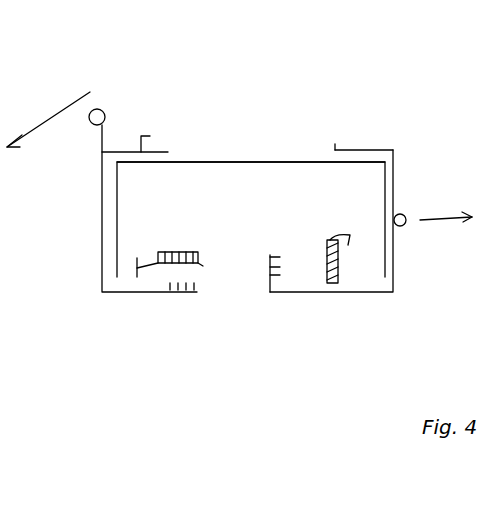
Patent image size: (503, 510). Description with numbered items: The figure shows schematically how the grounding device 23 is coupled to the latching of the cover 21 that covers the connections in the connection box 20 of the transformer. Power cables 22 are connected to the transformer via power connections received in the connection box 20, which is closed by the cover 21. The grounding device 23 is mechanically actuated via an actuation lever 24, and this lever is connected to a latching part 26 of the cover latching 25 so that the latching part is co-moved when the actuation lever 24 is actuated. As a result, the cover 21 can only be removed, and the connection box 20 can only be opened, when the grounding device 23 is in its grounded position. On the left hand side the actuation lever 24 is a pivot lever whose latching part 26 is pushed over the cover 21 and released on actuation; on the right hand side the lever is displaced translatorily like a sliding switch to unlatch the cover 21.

The connection box 20 is at (247, 208).
The cover 21 is at (235, 162).
The power cables 22 is at (313, 295).
The grounding device 23 is at (203, 286).
The actuation lever 24 is at (97, 142).
The cover latching 25 is at (170, 150).
The latching part 26 is at (153, 134).